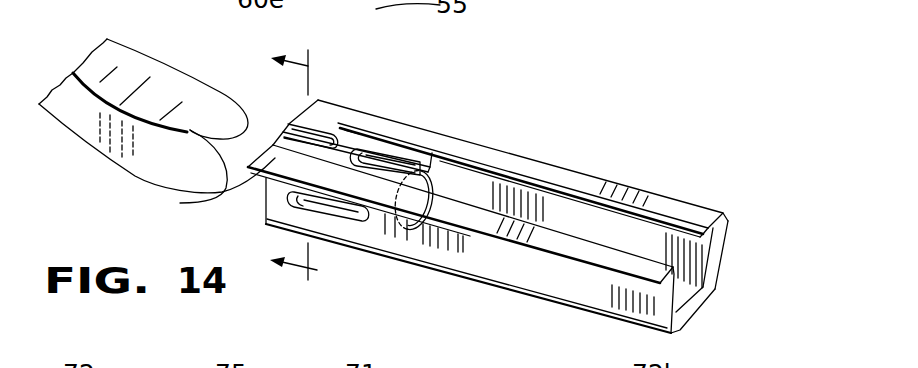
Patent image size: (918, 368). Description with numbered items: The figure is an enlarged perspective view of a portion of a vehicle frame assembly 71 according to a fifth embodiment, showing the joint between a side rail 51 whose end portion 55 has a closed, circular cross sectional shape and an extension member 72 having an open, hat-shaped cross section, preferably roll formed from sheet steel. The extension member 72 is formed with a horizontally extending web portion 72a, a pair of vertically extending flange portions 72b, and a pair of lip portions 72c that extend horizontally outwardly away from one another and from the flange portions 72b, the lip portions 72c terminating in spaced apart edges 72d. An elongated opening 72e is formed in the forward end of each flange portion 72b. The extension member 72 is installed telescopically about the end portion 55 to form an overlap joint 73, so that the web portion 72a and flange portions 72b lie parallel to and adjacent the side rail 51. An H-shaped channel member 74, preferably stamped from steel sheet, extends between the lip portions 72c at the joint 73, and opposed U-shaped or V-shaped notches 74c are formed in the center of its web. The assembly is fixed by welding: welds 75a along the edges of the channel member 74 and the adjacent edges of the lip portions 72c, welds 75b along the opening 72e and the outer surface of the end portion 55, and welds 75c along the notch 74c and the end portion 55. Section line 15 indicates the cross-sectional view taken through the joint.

The side rail 51 is at (123, 77).
The end portion 55 is at (180, 203).
The vehicle frame assembly 71 is at (498, 110).
The extension member 72 is at (491, 231).
The web portion 72a is at (703, 302).
The flange portions 72b is at (716, 256).
The lip portions 72c is at (706, 215).
The edges 72d is at (621, 188).
The elongated opening 72e is at (289, 198).
The overlap joint 73 is at (379, 113).
The H-shaped channel member 74 is at (272, 145).
The notches 74c is at (365, 142).
The welds 75a is at (330, 123).
The welds 75b is at (343, 210).
The welds 75c is at (277, 130).
The section line 15- 15 is at (314, 176).